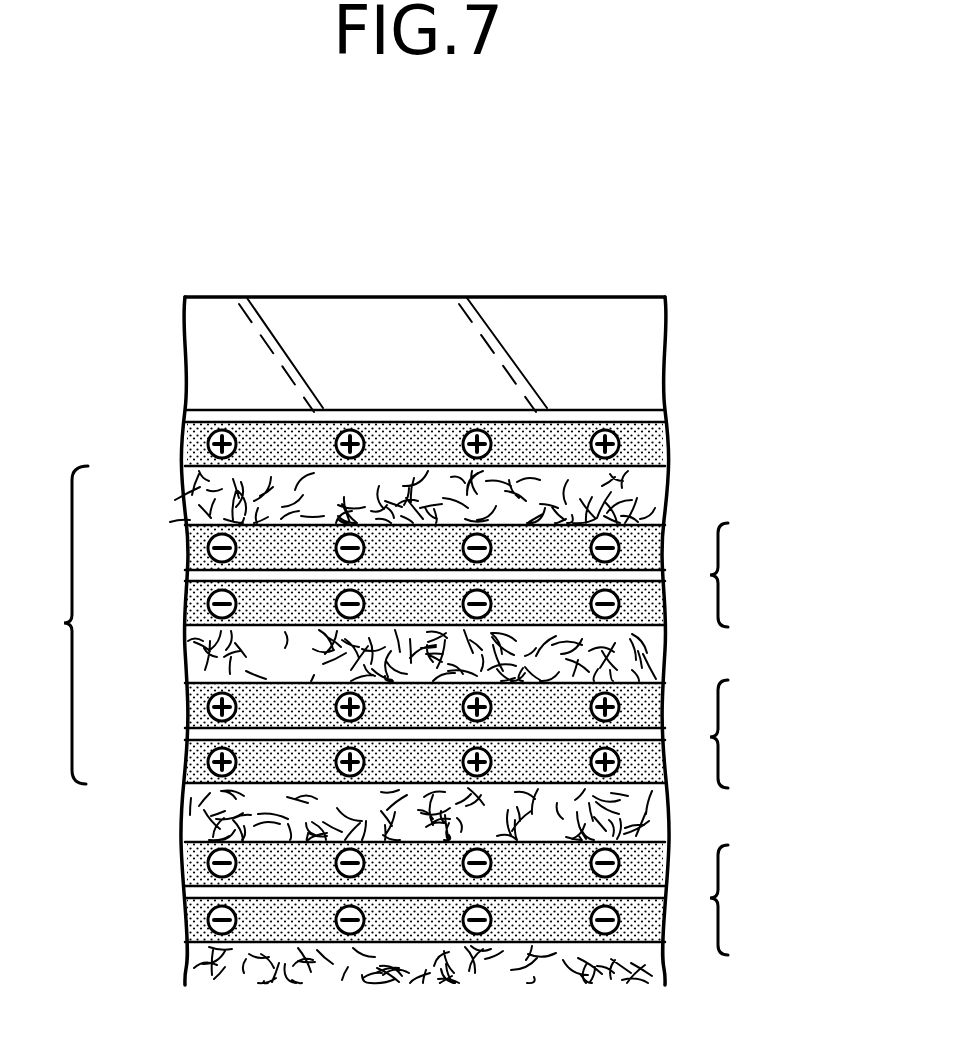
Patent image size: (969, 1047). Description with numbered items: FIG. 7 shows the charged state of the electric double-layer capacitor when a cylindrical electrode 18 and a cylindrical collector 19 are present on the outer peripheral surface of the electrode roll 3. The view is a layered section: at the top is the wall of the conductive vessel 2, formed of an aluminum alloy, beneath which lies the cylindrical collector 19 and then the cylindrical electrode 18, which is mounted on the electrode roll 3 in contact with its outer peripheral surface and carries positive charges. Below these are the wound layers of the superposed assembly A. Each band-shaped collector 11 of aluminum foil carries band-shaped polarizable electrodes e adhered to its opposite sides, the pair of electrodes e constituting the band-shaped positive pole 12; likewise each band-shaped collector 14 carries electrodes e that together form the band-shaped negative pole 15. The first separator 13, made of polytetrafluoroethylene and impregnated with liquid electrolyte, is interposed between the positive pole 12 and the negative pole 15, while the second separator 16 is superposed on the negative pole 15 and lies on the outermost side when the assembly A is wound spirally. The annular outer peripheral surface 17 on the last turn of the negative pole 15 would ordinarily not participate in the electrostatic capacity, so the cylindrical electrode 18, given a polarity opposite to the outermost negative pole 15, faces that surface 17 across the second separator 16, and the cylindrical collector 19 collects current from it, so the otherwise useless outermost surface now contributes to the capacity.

The vessel 2 is at (418, 316).
The electrode roll 3 is at (670, 485).
The band-shaped collector 11 is at (185, 736).
The band-shaped positive pole 12 is at (517, 734).
The first separator 13 is at (195, 660).
The band-shaped collector 14 is at (192, 578).
The band-shaped negative pole 15 is at (517, 739).
The second separator 16 is at (195, 490).
The annular outer peripheral surface 17 is at (625, 520).
The cylindrical electrode 18 is at (567, 437).
The cylindrical collector 19 is at (216, 415).
The superposed assembly A is at (59, 625).
The polarizable electrode e is at (660, 548).